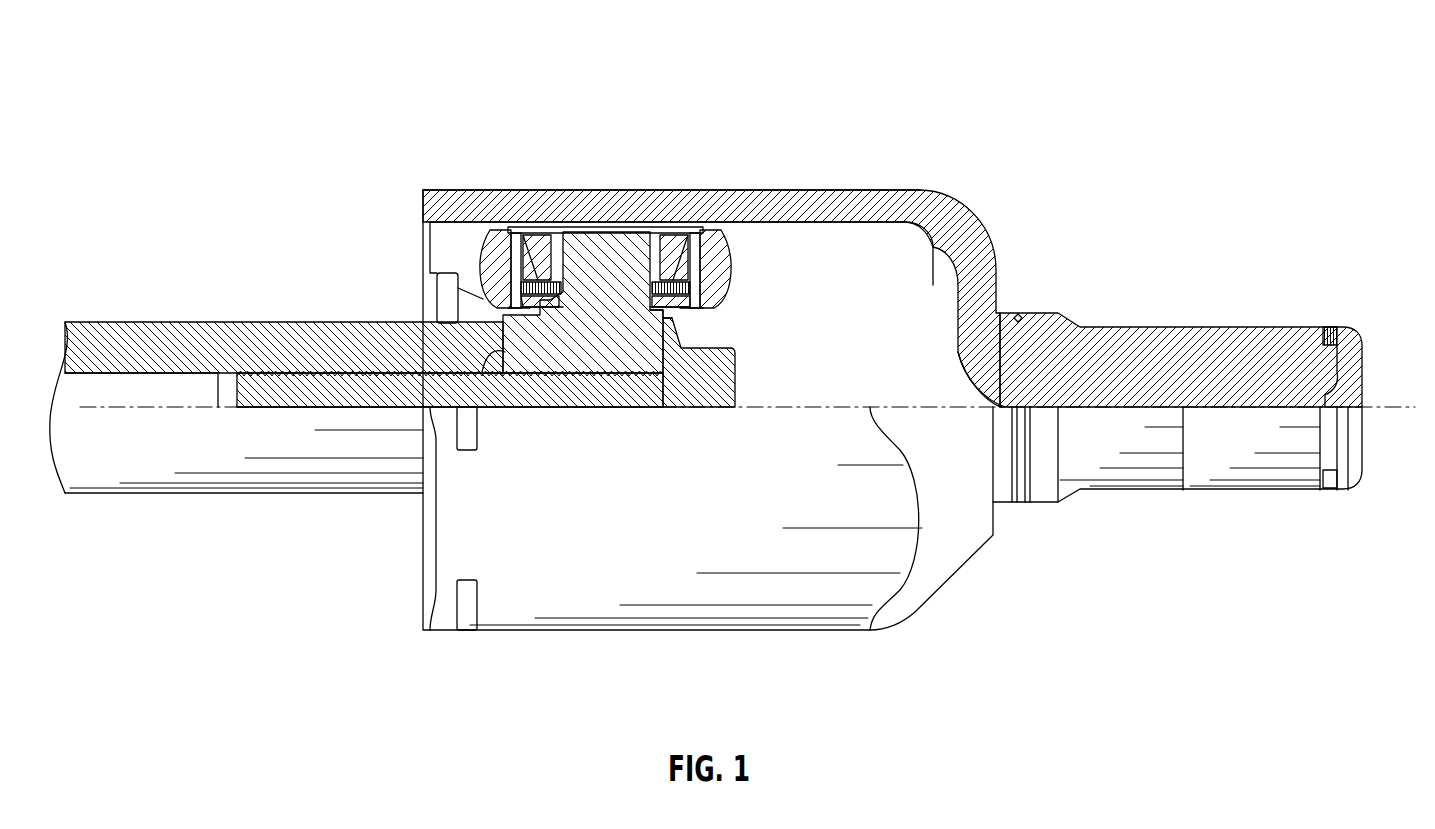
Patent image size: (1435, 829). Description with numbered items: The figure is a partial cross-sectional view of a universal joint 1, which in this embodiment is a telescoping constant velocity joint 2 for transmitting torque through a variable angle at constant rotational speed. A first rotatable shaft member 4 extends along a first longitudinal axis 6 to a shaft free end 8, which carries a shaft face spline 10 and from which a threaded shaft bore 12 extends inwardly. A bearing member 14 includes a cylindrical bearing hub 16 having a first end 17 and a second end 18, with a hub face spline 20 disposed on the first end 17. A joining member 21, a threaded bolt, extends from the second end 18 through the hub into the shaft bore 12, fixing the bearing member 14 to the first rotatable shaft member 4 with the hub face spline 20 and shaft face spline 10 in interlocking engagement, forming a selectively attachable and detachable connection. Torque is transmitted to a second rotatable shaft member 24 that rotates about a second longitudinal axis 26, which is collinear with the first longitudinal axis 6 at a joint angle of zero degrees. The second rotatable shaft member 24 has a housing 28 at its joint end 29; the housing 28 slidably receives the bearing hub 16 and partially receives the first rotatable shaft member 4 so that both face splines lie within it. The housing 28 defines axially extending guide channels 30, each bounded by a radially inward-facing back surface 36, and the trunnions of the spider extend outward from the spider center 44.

The universal joint 1 is at (1000, 75).
The constant velocity joint 2 is at (895, 165).
The first rotatable shaft member 4 is at (117, 321).
The first longitudinal axis 6 is at (130, 390).
The shaft free end 8 is at (493, 335).
The shaft face spline 10 is at (488, 410).
The shaft bore 12 is at (200, 376).
The bearing member 14 is at (740, 279).
The bearing hub 16 is at (627, 227).
The first end 17 is at (525, 275).
The second end 18 is at (680, 322).
The hub face spline 20 is at (565, 410).
The joining member 21 is at (738, 349).
The second rotatable shaft member 24 is at (1133, 324).
The second longitudinal axis 26 is at (1385, 400).
The housing 28 is at (750, 184).
The joint end 29 is at (1020, 315).
The guide channel 30 is at (909, 259).
The back surface 36 is at (856, 229).
The spider center 44 is at (605, 405).